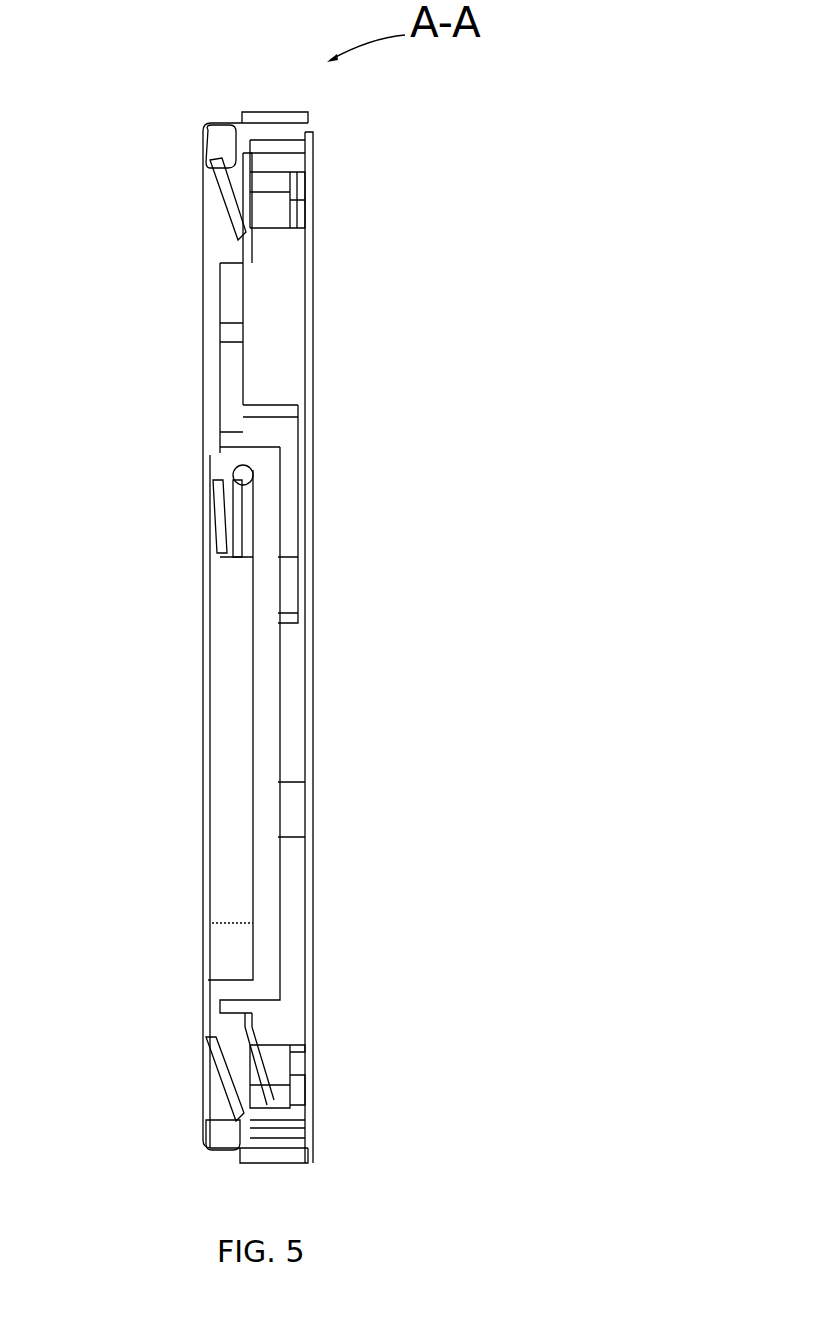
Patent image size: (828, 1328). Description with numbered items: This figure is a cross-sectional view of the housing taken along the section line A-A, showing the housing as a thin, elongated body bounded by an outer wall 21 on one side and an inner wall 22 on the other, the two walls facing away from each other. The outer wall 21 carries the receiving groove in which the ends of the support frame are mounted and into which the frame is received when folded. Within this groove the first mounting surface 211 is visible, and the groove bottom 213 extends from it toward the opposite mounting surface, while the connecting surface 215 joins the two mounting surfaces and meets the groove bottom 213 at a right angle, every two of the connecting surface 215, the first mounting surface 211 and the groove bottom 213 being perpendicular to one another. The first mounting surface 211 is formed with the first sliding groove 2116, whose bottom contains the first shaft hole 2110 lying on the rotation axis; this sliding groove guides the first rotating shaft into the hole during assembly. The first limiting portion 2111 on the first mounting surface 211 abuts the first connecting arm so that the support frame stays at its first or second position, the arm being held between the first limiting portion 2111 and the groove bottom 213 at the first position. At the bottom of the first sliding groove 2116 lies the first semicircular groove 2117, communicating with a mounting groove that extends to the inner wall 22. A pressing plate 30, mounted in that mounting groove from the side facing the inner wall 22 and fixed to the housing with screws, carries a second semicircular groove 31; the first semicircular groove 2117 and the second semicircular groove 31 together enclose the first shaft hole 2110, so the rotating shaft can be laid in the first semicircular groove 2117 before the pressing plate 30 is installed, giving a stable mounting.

The outer wall 21 is at (200, 347).
The inner wall 22 is at (318, 382).
The first mounting surface 211 is at (227, 613).
The groove bottom 213 is at (243, 675).
The connecting surface 215 is at (236, 970).
The first shaft hole 2110 is at (233, 463).
The first limiting portion 2111 is at (237, 510).
The first sliding groove 2116 is at (237, 552).
The first semicircular groove 2117 is at (237, 482).
The pressing plate 30 is at (243, 533).
The second semicircular groove 31 is at (253, 473).